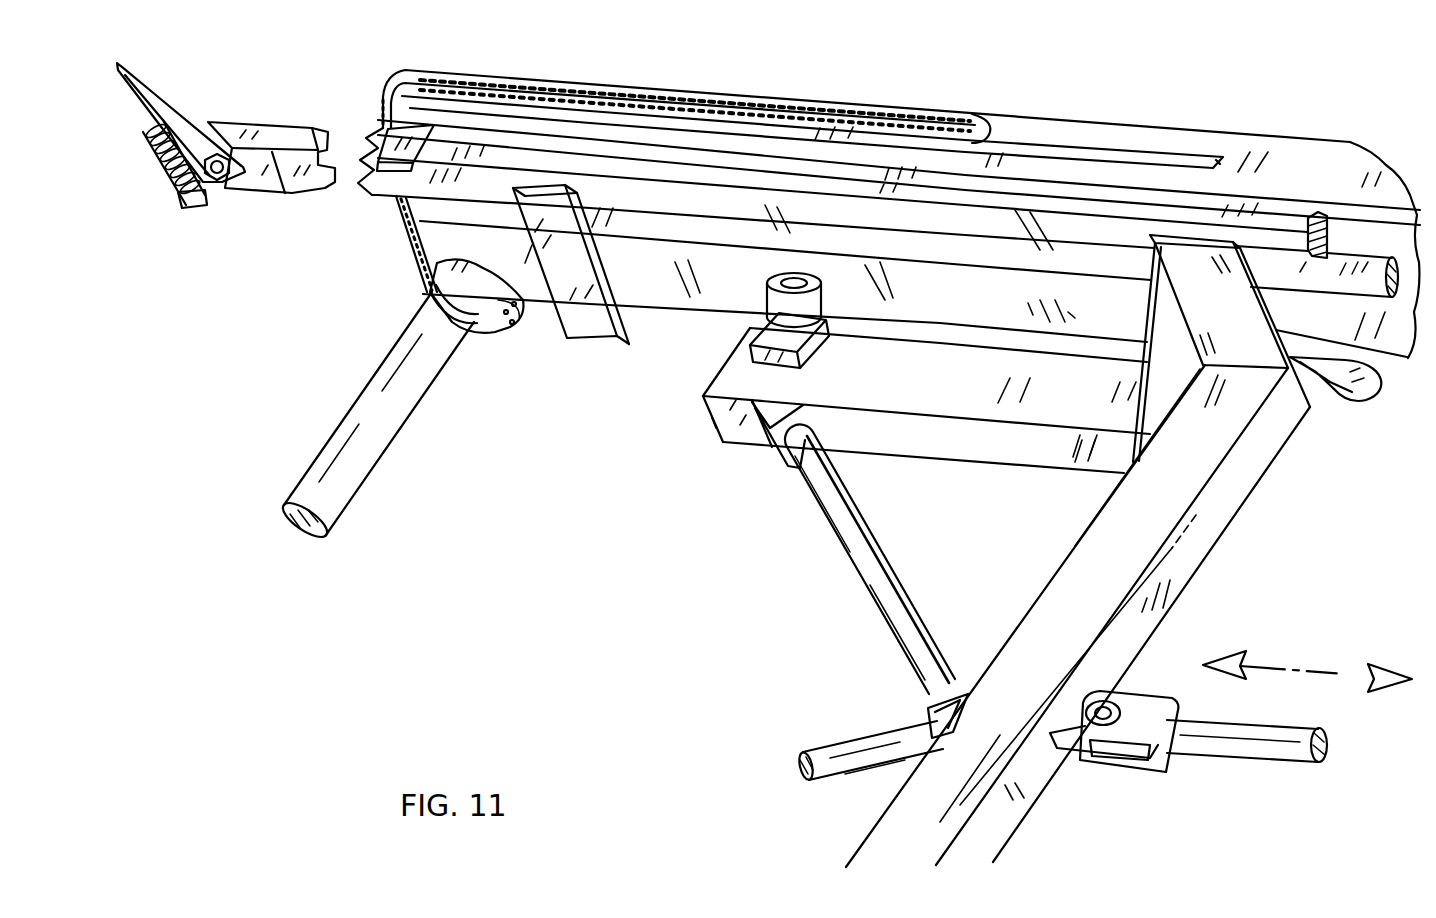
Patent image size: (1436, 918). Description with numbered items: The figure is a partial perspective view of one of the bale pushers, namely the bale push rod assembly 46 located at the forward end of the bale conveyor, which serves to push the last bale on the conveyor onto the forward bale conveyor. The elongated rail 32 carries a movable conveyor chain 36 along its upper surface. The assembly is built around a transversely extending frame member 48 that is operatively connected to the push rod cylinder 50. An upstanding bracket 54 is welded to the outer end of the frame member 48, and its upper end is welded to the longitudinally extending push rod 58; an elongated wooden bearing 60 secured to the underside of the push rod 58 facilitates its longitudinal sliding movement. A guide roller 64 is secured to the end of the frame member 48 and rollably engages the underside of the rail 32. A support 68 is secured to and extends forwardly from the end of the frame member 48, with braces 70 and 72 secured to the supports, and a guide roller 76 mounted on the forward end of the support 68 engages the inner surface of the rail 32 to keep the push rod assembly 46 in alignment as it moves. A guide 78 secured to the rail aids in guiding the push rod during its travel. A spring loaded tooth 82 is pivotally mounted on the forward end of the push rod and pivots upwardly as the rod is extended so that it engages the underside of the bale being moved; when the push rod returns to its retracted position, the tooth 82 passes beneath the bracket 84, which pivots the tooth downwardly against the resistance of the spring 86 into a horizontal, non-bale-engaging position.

The rail 32 is at (1233, 133).
The conveyor chain 36 is at (807, 103).
The bale push rod assembly 46 is at (1219, 593).
The frame member 48 is at (1097, 573).
The push rod cylinder 50 is at (1256, 760).
The upstanding bracket 54 is at (1225, 328).
The push rod 58 is at (1197, 207).
The wooden bearing 60 is at (1360, 256).
The guide roller 64 is at (1367, 390).
The support 68 is at (902, 392).
The brace 70 is at (860, 747).
The brace 72 is at (873, 562).
The guide roller 76 is at (800, 290).
The guide 78 is at (590, 298).
The spring loaded tooth 82 is at (167, 100).
The bracket 84 is at (368, 140).
The spring 86 is at (167, 172).